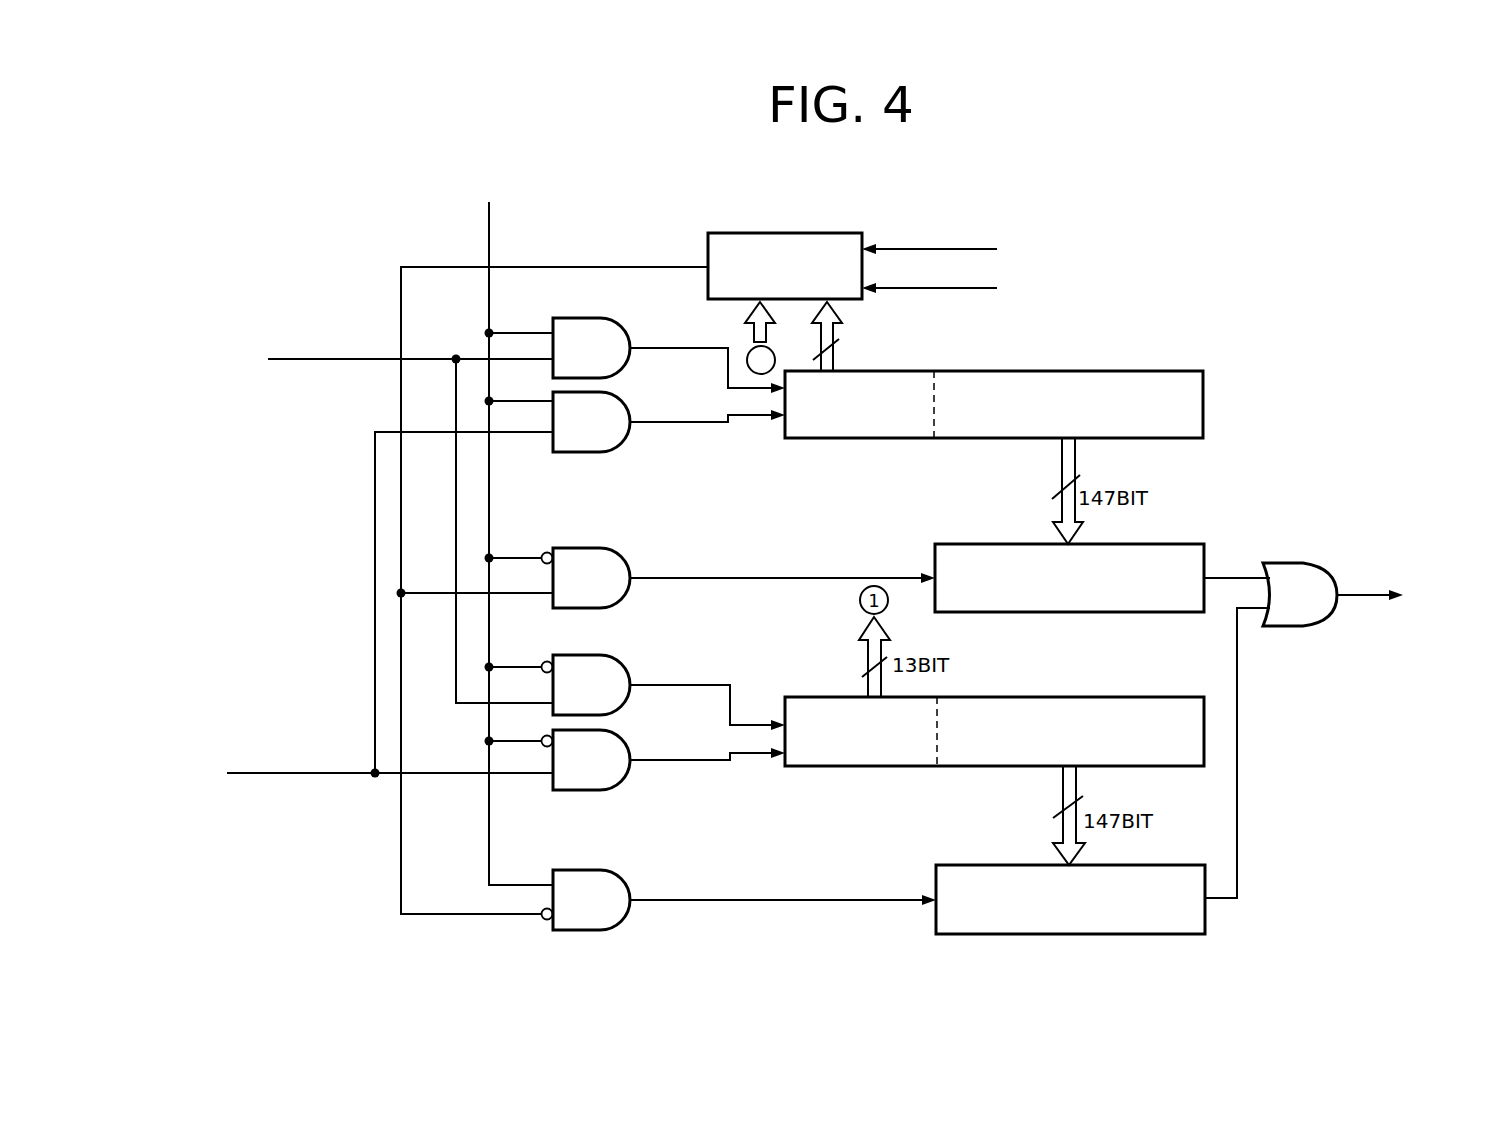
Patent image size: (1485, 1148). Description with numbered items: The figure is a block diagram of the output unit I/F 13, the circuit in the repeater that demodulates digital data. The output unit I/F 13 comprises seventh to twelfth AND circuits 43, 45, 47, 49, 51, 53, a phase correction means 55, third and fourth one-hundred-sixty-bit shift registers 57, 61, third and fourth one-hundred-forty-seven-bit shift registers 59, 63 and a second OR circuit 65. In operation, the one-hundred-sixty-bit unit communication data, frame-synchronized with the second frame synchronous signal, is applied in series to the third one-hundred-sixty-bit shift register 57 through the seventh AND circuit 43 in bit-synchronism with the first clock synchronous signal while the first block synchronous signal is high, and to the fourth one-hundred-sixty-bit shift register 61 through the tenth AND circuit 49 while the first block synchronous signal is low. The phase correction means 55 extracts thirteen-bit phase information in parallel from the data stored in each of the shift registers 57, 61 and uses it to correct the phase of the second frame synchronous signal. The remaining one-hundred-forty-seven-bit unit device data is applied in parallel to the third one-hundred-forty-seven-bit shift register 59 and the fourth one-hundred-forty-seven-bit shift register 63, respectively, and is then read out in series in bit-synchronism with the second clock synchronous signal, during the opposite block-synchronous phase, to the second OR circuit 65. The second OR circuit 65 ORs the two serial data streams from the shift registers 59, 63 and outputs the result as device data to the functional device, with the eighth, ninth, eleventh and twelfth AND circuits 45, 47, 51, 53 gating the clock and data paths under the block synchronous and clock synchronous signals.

The output unit I/F 13 is at (1099, 276).
The seventh AND circuit 43 is at (583, 318).
The eighth AND circuit 45 is at (627, 403).
The ninth AND circuit 47 is at (590, 548).
The tenth AND circuit 49 is at (584, 655).
The eleventh AND circuit 51 is at (628, 746).
The twelfth AND circuit 53 is at (590, 870).
The phase correction means 55 is at (783, 232).
The third 160-bit shift register 57 is at (1170, 371).
The third 147-bit shift register 59 is at (1170, 544).
The fourth 160-bit shift register 61 is at (1170, 697).
The fourth 147-bit shift register 63 is at (1170, 865).
The second OR circuit 65 is at (1310, 563).